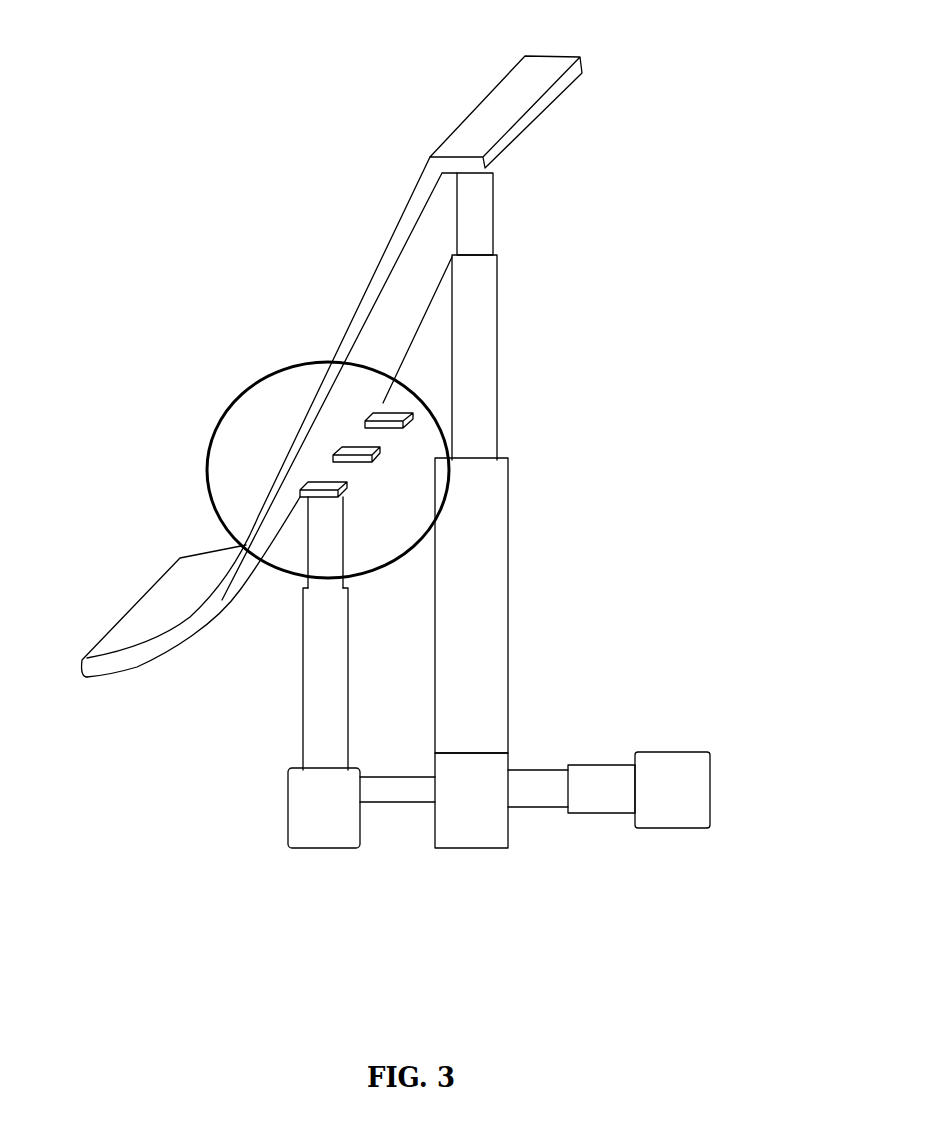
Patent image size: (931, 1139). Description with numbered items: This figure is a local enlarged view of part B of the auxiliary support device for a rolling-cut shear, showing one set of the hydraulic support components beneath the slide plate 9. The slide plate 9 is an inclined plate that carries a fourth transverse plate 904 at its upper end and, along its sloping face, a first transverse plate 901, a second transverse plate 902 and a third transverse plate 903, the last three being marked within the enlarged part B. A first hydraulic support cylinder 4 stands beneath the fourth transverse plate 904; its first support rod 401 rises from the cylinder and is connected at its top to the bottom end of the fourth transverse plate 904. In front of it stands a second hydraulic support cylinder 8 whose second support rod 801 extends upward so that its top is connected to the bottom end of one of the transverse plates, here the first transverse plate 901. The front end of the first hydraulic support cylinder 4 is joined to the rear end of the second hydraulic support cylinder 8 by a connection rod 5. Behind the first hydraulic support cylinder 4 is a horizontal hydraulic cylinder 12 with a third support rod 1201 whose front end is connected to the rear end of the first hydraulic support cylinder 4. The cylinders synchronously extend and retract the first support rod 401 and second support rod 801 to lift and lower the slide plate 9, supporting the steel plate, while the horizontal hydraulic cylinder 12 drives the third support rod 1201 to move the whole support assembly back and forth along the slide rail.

The slide plate 9 is at (395, 235).
The fourth transverse plate 904 is at (490, 128).
The first support rod 401 is at (482, 205).
The first hydraulic support cylinder 4 is at (467, 567).
The third transverse plate 903 is at (383, 412).
The second transverse plate 902 is at (357, 450).
The first transverse plate 901 is at (320, 485).
The part B is at (212, 497).
The second support rod 801 is at (325, 537).
The second hydraulic support cylinder 8 is at (323, 672).
The connection rod 5 is at (393, 788).
The third support rod 1201 is at (523, 790).
The horizontal hydraulic cylinder 12 is at (670, 790).